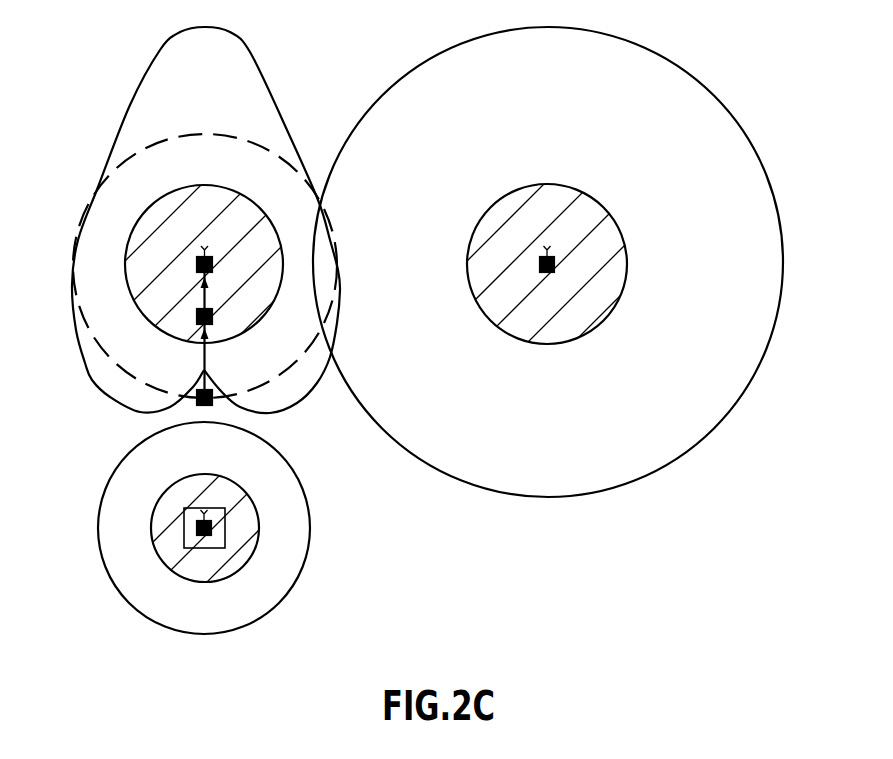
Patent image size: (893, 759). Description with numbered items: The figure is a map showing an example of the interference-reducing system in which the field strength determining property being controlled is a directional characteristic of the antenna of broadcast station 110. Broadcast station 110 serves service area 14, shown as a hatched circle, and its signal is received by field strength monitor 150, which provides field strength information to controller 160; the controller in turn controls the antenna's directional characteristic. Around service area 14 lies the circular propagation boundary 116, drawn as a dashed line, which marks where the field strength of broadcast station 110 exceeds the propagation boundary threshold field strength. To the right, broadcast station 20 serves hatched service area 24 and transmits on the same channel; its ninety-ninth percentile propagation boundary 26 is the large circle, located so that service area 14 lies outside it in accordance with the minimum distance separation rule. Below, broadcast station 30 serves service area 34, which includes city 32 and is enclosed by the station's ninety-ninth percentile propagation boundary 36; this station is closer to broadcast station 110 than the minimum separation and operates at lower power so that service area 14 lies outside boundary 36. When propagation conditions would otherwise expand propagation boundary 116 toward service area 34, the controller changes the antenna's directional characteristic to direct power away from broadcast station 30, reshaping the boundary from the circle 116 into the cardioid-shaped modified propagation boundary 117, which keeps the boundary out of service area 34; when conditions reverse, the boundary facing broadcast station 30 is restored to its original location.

The modified propagation boundary 117 is at (140, 90).
The propagation boundary 116 is at (222, 135).
The service area 14 is at (151, 204).
The broadcast station 110 is at (206, 247).
The controller 160 is at (212, 316).
The field strength monitor 150 is at (198, 398).
The 99th percentile propagation boundary 26 is at (417, 68).
The service area 24 is at (492, 208).
The broadcast station 20 is at (553, 257).
The 99th percentile propagation boundary 36 is at (98, 532).
The service area 34 is at (178, 482).
The broadcast station 30 is at (211, 517).
The city 32 is at (186, 546).